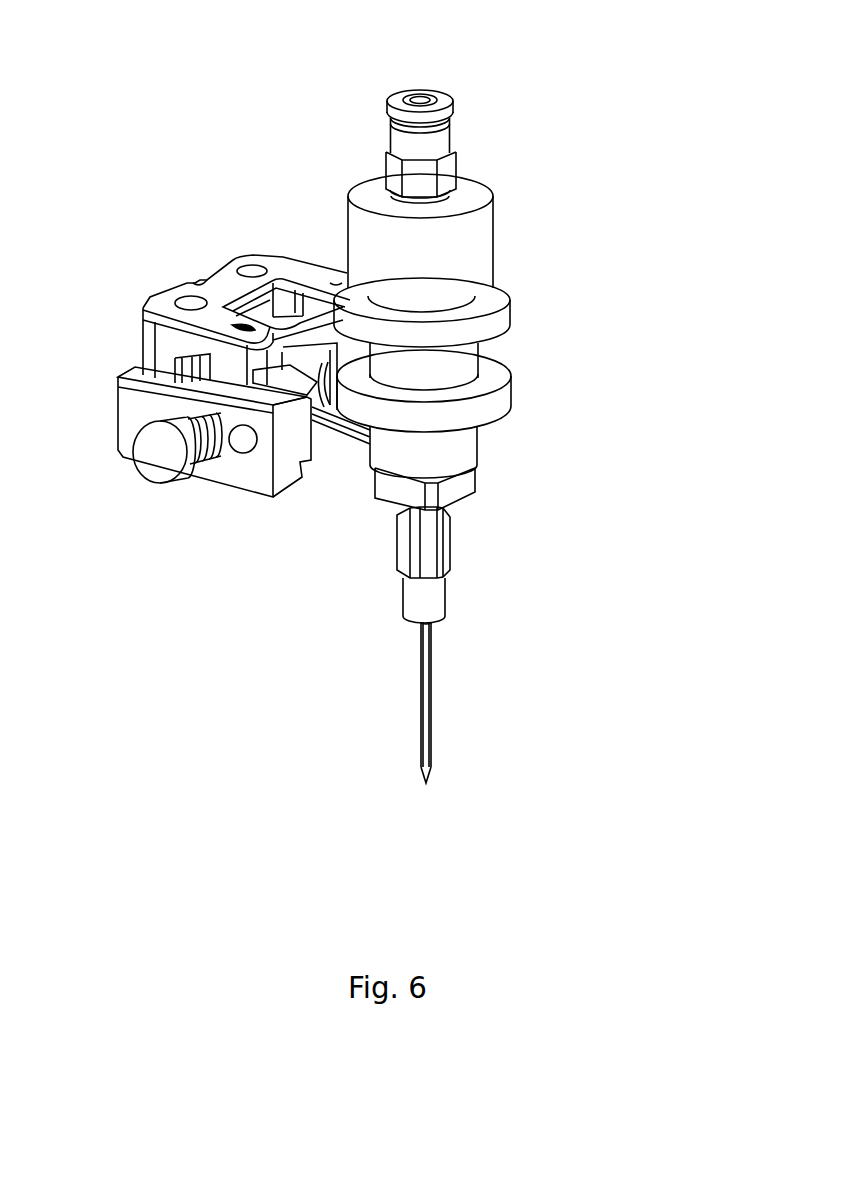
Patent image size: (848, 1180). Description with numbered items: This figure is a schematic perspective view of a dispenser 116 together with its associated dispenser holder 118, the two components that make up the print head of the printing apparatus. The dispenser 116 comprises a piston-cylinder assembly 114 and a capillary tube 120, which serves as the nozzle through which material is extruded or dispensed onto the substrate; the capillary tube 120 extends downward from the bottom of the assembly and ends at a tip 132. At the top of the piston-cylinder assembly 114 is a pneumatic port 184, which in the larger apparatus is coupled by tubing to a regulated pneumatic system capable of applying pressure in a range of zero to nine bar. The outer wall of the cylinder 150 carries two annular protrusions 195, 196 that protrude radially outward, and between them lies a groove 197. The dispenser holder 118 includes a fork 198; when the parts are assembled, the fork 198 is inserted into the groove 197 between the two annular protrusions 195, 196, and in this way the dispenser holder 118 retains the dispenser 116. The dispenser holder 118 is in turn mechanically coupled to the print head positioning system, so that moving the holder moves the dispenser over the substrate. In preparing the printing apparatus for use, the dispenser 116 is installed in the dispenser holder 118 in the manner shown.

The piston-cylinder assembly 114 is at (634, 259).
The dispenser 116 is at (593, 96).
The dispenser holder 118 is at (142, 272).
The capillary tube 120 is at (377, 628).
The needle tip 132 is at (410, 787).
The cylinder 150 is at (493, 443).
The pneumatic port 184 is at (421, 78).
The annular protrusion 195 is at (524, 318).
The annular protrusion 196 is at (524, 389).
The groove 197 is at (513, 351).
The fork 198 is at (245, 318).